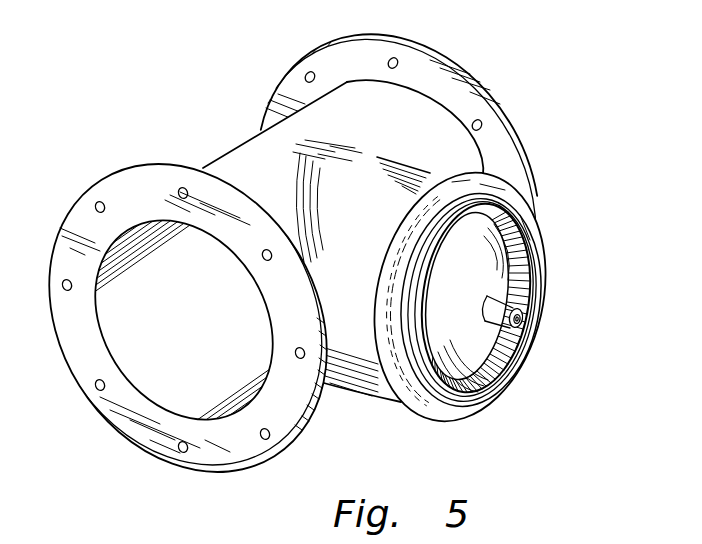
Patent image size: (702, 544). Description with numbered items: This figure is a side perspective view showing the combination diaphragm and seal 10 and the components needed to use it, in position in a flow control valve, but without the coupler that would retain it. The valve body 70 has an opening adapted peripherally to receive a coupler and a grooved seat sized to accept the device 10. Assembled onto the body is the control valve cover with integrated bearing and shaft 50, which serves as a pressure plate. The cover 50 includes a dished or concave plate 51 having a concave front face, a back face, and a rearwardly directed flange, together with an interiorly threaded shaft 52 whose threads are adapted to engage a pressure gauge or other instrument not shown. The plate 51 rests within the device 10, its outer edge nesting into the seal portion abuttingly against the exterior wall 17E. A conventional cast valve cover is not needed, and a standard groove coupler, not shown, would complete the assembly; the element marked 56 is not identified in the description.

The combination diaphragm & seal 10 is at (410, 425).
The valve body 70 is at (210, 167).
The exterior wall 17E is at (435, 423).
The control valve cover with integrated bearing and shaft 50 is at (482, 365).
The dished plate 51 is at (468, 302).
The interiorly threaded shaft 52 is at (514, 296).
The aperture 56 is at (527, 323).